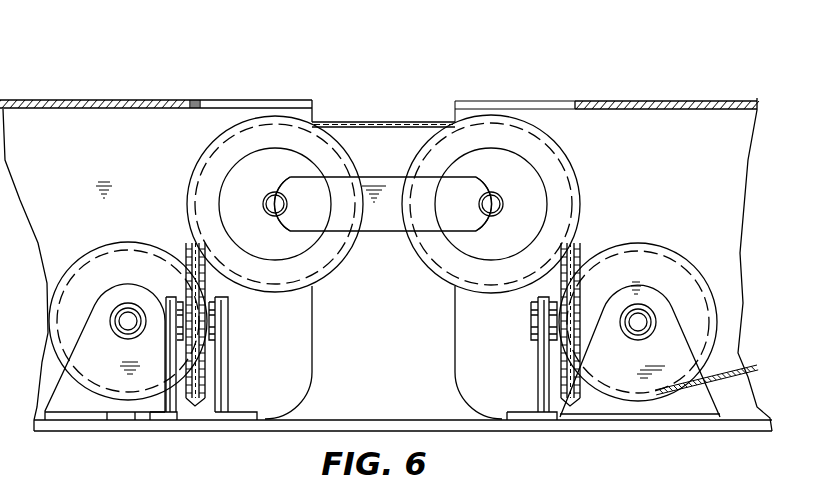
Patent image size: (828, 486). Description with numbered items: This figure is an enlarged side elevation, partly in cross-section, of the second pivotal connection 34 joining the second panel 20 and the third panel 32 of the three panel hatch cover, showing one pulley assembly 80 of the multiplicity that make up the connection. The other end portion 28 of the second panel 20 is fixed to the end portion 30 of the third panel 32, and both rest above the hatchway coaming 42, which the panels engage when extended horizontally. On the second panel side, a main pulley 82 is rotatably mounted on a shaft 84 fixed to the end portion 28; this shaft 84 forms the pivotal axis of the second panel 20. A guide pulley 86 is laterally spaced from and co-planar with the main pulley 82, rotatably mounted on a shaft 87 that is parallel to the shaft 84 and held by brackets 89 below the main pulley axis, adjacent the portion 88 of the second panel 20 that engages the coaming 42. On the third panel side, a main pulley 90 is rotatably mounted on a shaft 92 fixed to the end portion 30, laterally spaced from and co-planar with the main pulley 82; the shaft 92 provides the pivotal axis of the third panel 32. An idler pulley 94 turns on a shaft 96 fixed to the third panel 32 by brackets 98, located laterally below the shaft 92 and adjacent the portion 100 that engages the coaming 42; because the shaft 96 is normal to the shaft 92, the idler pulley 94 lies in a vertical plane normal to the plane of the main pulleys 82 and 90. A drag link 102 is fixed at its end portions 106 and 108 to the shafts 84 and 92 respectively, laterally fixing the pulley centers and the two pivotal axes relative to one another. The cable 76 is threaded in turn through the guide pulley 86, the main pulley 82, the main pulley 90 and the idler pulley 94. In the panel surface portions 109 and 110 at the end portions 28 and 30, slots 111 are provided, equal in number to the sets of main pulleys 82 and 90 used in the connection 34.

The second panel 20 is at (676, 101).
The other end portion of the second panel 28 is at (678, 164).
The end portion of the third panel 30 is at (52, 164).
The third panel 32 is at (105, 100).
The second pivotal connection 34 is at (389, 73).
The hatchway coaming 42 is at (354, 419).
The cable 76 is at (404, 121).
The pulley assembly 80 is at (370, 157).
The main pulley 82 is at (573, 170).
The shaft 84 is at (483, 202).
The guide pulley 86 is at (672, 253).
The shaft 87 is at (633, 328).
The portion of the second panel 88 is at (518, 412).
The brackets 89 is at (692, 403).
The main pulley 90 is at (190, 167).
The shaft 92 is at (284, 202).
The idler pulley 94 is at (187, 242).
The shaft 96 is at (226, 298).
The brackets 98 is at (230, 380).
The portion of the third panel 100 is at (105, 411).
The drag link 102 is at (383, 233).
The end portion of the drag links 106 is at (490, 185).
The end portion of the drag links 108 is at (283, 190).
The panel surface portion 109 is at (622, 101).
The panel surface portion 110 is at (153, 100).
The slots 111 is at (217, 102).